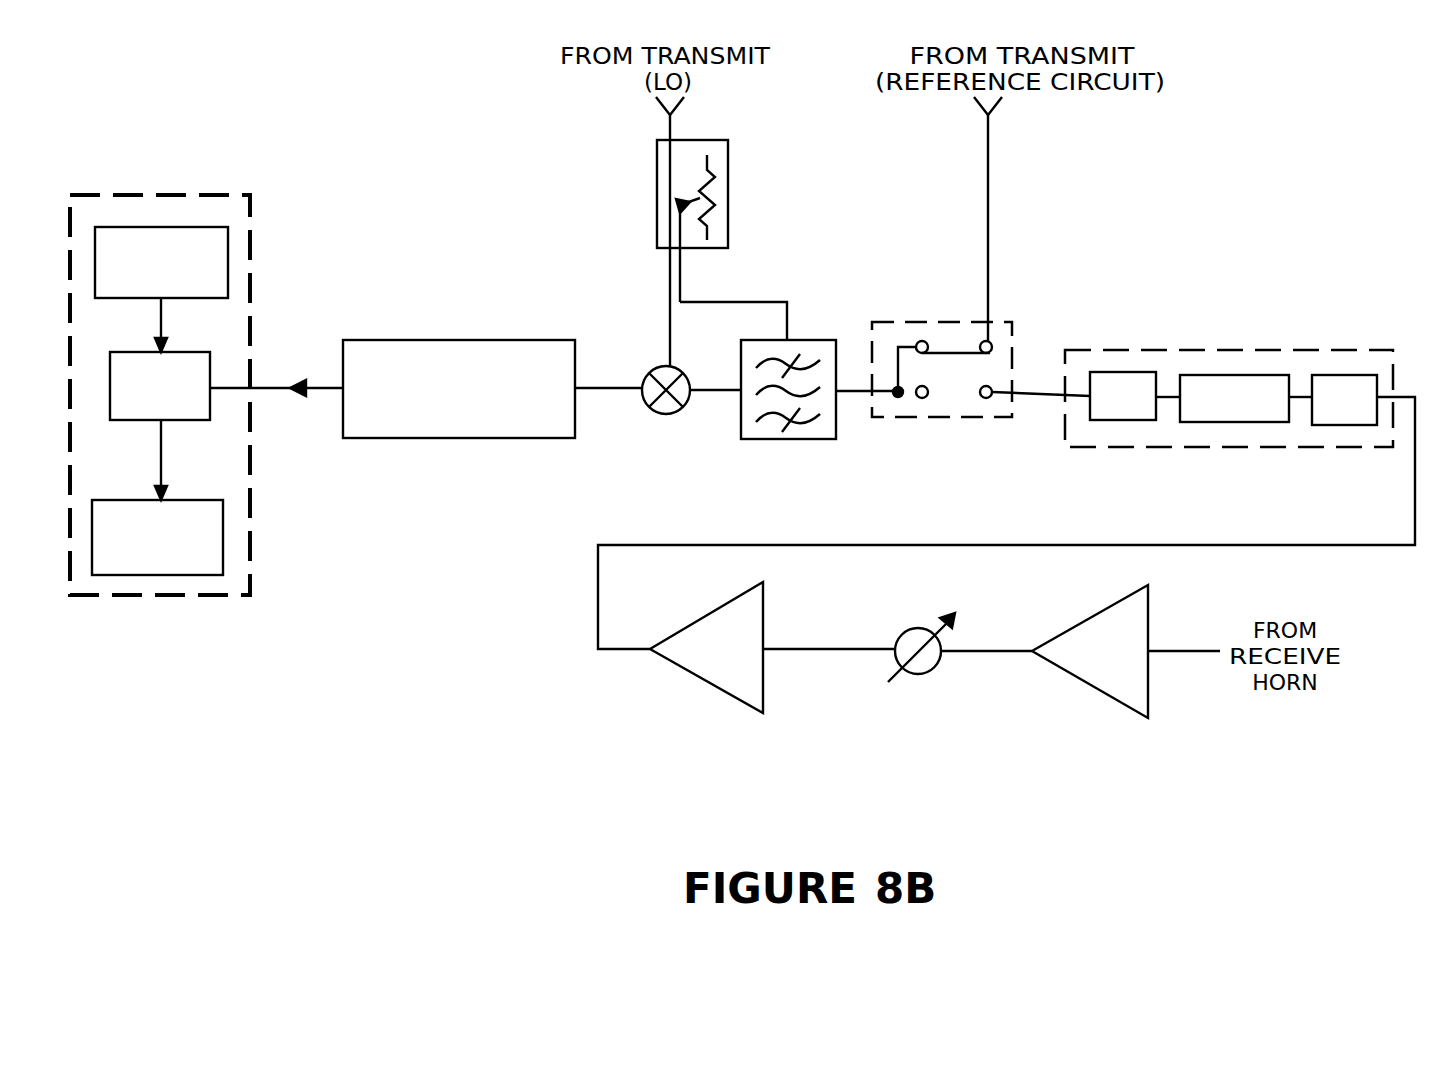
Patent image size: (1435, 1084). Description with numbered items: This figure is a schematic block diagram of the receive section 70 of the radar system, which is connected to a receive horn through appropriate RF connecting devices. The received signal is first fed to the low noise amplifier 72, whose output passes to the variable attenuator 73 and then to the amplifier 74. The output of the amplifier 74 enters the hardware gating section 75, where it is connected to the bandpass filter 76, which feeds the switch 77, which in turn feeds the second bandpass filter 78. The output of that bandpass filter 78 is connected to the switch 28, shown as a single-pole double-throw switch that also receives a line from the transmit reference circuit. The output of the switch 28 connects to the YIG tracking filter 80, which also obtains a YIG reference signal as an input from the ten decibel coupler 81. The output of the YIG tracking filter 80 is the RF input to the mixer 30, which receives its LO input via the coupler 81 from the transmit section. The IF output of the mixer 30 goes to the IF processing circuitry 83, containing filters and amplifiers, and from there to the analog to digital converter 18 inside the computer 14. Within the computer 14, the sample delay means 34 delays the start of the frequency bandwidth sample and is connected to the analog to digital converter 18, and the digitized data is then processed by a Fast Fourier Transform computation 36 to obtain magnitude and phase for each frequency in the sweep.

The computer 14 is at (250, 510).
The means for delaying the start of the frequency bandwidth sample 34 is at (228, 248).
The analog to digital converter 18 is at (210, 400).
The compute FFT 36 is at (130, 575).
The IF processing circuitry 83 is at (400, 340).
The mixer 30 is at (655, 412).
The 10 dB coupler 81 is at (728, 175).
The YIG tracking filter 80 is at (828, 340).
The switch 28 is at (935, 322).
The hardware gating section 75 is at (1070, 350).
The bandpass filter 78 is at (1110, 420).
The switch 77 is at (1250, 422).
The bandpass filter 76 is at (1355, 375).
The receive section 70 is at (1160, 230).
The amplifier 74 is at (676, 628).
The variable attenuator 73 is at (905, 632).
The low noise amplifier 72 is at (1122, 708).